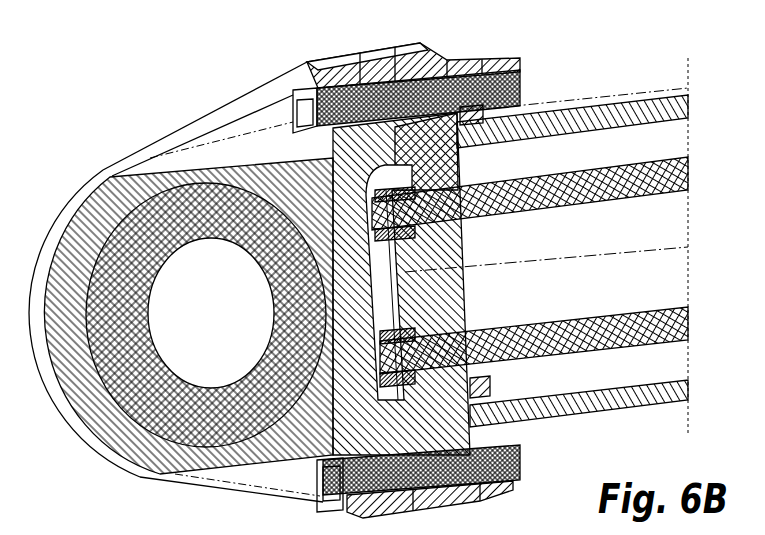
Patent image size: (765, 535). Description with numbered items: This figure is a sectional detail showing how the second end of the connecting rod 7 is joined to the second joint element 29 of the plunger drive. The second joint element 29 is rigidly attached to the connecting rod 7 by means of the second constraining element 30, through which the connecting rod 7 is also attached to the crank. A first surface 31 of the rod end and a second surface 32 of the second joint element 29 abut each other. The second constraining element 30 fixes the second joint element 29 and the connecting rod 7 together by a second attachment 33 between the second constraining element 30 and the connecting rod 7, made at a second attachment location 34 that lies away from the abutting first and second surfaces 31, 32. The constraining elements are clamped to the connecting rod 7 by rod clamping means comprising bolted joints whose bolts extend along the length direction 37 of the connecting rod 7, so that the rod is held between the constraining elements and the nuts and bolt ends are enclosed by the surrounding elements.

The connecting rod 7 is at (554, 89).
The second joint element 29 is at (141, 129).
The second constraining element 30 is at (476, 40).
The first surface 31 is at (470, 170).
The second surface 32 is at (478, 392).
The second attachment 33 is at (334, 217).
The second attachment location 34 is at (345, 238).
The length direction 37 is at (580, 262).